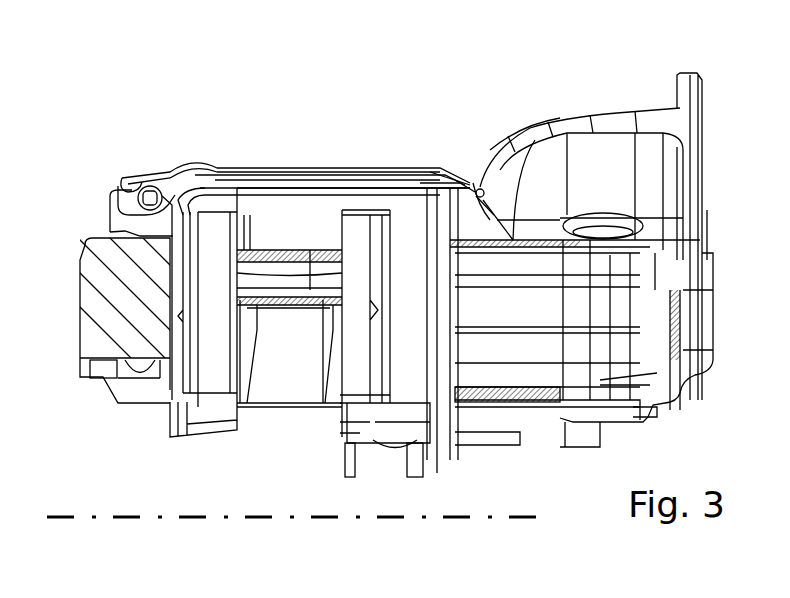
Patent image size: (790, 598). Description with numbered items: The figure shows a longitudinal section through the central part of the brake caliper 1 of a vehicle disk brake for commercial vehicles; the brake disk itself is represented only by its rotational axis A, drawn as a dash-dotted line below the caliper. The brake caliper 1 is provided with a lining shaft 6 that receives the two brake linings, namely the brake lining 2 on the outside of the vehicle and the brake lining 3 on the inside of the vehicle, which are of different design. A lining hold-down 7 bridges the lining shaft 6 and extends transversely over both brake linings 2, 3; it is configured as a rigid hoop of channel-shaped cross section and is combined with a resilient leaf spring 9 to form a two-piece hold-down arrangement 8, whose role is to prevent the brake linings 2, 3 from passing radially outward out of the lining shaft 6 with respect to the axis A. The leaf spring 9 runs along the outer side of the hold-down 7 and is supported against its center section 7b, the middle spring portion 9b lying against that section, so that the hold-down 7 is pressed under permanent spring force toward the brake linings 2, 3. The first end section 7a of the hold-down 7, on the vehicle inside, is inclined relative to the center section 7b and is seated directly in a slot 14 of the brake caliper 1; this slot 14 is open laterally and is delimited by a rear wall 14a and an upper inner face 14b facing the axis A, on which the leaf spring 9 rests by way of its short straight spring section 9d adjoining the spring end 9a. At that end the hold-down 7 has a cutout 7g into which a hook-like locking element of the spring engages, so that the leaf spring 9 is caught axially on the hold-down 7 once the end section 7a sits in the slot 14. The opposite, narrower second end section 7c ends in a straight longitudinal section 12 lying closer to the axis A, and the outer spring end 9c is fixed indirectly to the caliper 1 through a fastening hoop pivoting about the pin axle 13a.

The brake caliper 1 is at (113, 345).
The brake lining 2 is at (211, 452).
The brake lining 3 is at (337, 438).
The lining shaft 6 is at (247, 228).
The lining hold-down 7 is at (230, 183).
The first end section 7a is at (463, 187).
The center section 7b is at (327, 183).
The second end section 7c is at (175, 192).
The cutout 7g is at (478, 185).
The hold-down arrangement 8 is at (300, 166).
The leaf spring 9 is at (365, 165).
The spring end 9a is at (470, 187).
The spring plate middle section 9b is at (267, 172).
The spring end 9c is at (142, 163).
The spring section 9d is at (438, 165).
The straight longitudinal section 12 is at (150, 223).
The axle 13a is at (150, 197).
The slot 14 is at (480, 183).
The rear wall 14a is at (487, 183).
The upper inner face 14b is at (447, 170).
The rotational axis A is at (200, 525).